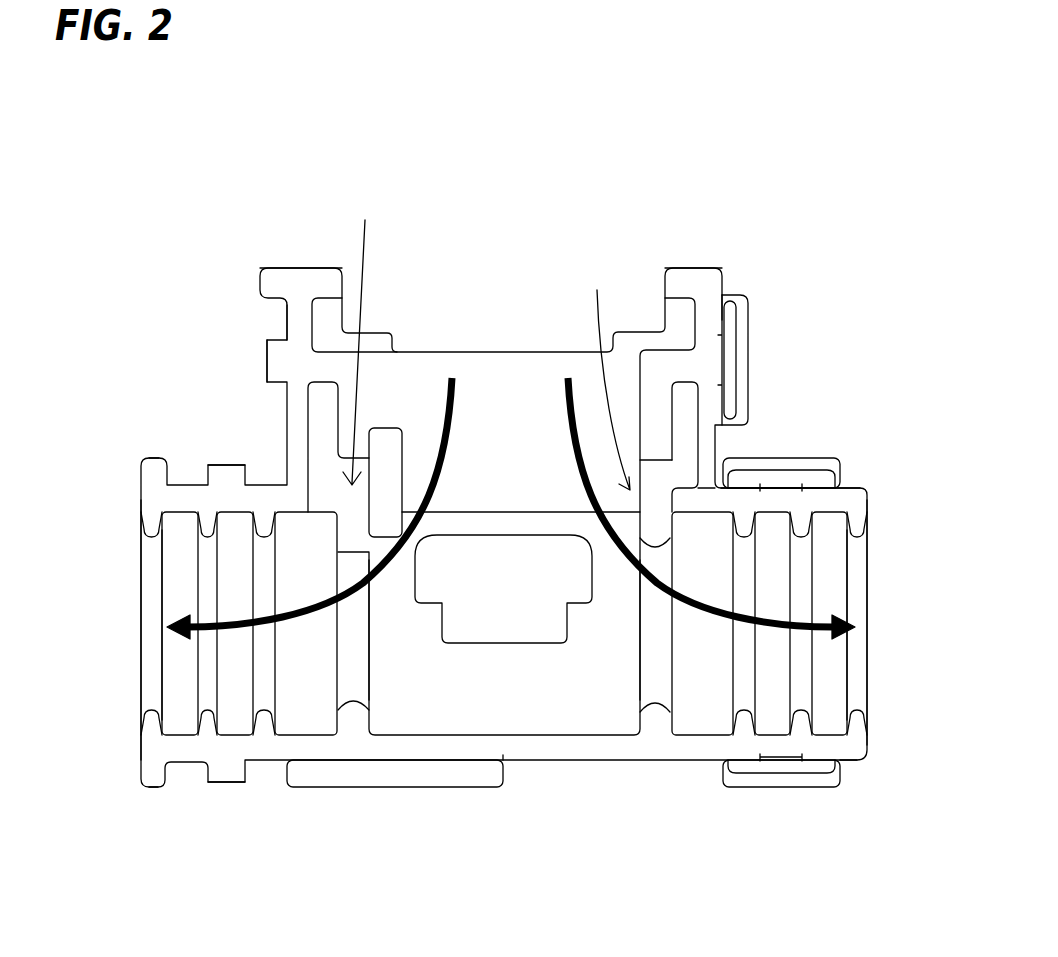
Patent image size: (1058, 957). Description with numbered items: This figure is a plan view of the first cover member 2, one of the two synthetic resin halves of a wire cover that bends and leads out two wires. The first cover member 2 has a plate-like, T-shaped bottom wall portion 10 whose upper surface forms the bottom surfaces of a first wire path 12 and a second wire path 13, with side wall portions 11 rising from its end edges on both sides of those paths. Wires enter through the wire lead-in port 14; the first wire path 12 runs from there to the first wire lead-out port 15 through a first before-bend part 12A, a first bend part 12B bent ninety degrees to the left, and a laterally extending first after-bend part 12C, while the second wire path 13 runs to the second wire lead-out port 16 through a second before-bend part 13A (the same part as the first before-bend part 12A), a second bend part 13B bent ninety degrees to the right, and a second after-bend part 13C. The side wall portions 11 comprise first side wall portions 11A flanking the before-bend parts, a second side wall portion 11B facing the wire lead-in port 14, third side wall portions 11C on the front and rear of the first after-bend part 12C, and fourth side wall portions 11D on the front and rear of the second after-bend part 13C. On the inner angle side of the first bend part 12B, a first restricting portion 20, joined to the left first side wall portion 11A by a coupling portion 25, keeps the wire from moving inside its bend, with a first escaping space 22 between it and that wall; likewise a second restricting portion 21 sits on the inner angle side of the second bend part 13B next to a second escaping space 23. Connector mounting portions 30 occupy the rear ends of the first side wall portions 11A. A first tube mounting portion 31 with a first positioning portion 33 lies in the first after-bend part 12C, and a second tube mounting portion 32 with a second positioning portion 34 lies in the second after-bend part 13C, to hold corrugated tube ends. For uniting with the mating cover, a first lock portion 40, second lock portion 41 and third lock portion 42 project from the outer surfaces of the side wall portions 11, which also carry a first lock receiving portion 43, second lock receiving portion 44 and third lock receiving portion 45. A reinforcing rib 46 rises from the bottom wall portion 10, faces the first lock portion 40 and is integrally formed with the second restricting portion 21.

The first cover member 2 is at (784, 165).
The bottom wall portion 10 is at (512, 718).
The side wall portions 11 is at (560, 750).
The first side wall portions 11A is at (290, 320).
The second side wall portion 11B is at (435, 753).
The third side wall portions 11C is at (187, 490).
The fourth side wall portions 11D is at (787, 497).
The first wire path 12 is at (302, 617).
The first before-bend part 12A is at (447, 418).
The first bend part 12B is at (393, 515).
The first after-bend part 12C is at (210, 633).
The second wire path 13 is at (710, 613).
The second before-bend part 13A is at (562, 400).
The second bend part 13B is at (647, 582).
The second after-bend part 13C is at (802, 633).
The wire lead-in port 14 is at (498, 352).
The first wire lead-out port 15 is at (142, 600).
The second wire lead-out port 16 is at (868, 625).
The first restricting portion 20 is at (388, 458).
The second restricting portion 21 is at (650, 468).
The first escaping space 22 is at (360, 339).
The second escaping space 23 is at (607, 374).
The coupling portion 25 is at (327, 375).
The connector mounting portions 30 is at (328, 278).
The first tube mounting portion 31 is at (173, 553).
The second tube mounting portion 32 is at (830, 575).
The first positioning portion 33 is at (352, 673).
The second positioning portion 34 is at (657, 667).
The first lock portion 40 is at (748, 347).
The second lock portion 41 is at (770, 465).
The third lock portion 42 is at (785, 782).
The first lock receiving portion 43 is at (270, 358).
The second lock receiving portion 44 is at (227, 473).
The third lock receiving portion 45 is at (228, 770).
The reinforcing rib 46 is at (688, 408).